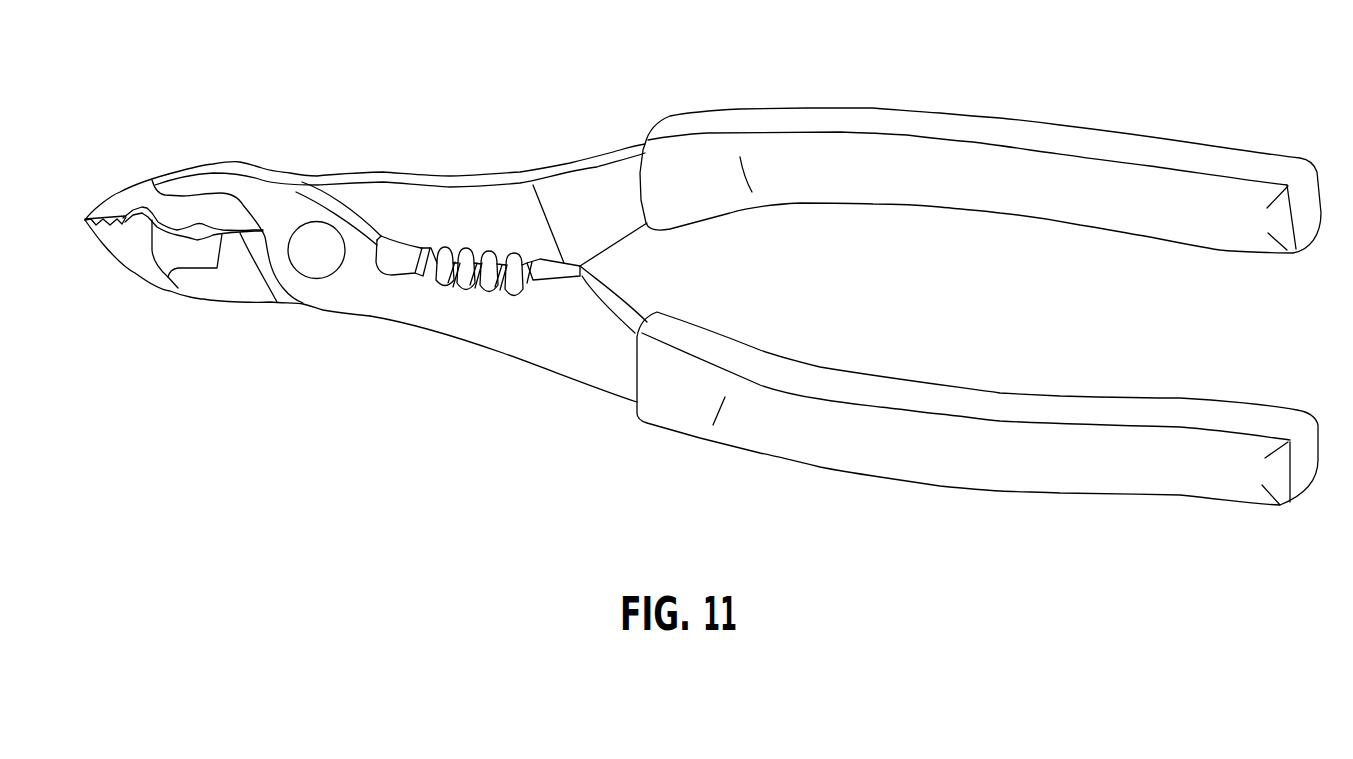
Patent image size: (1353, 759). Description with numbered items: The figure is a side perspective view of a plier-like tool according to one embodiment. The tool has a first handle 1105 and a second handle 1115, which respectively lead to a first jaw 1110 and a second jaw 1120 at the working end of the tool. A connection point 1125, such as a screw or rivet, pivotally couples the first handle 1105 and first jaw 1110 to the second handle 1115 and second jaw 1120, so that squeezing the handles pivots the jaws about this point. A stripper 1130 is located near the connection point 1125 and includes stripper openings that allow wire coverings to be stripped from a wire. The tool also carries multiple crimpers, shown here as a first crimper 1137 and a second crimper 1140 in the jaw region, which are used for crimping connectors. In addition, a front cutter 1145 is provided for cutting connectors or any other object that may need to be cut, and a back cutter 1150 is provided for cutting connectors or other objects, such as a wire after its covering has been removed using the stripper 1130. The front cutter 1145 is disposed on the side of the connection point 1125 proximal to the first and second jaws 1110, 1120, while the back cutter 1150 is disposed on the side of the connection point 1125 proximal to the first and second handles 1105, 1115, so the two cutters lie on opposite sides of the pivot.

The first handle 1105 is at (1200, 226).
The second handle 1115 is at (1193, 472).
The first jaw 1110 is at (120, 244).
The second jaw 1120 is at (190, 170).
The connection point 1125 is at (298, 224).
The stripper 1130 is at (480, 247).
The first crimper 1137 is at (143, 210).
The second crimper 1140 is at (197, 223).
The front cutter 1145 is at (223, 240).
The back cutter 1150 is at (408, 257).